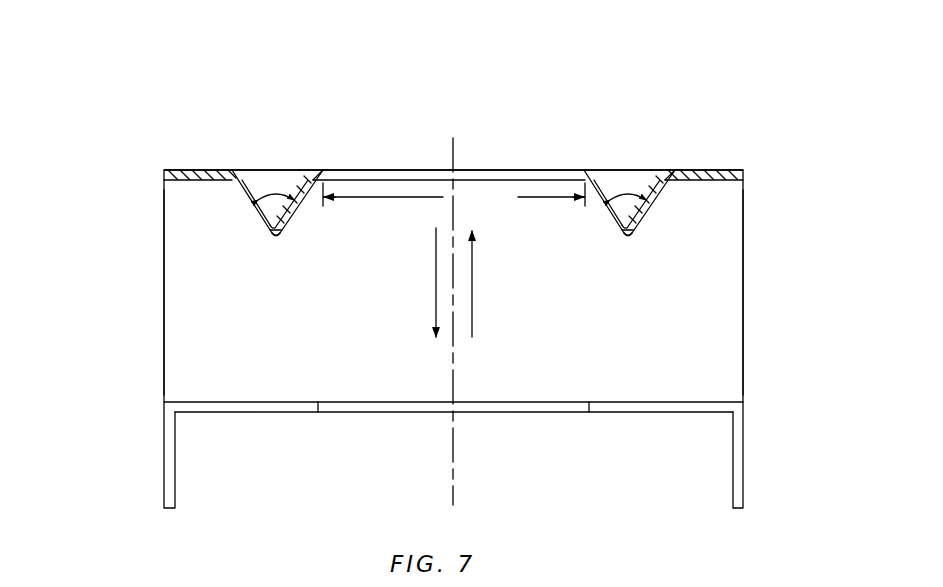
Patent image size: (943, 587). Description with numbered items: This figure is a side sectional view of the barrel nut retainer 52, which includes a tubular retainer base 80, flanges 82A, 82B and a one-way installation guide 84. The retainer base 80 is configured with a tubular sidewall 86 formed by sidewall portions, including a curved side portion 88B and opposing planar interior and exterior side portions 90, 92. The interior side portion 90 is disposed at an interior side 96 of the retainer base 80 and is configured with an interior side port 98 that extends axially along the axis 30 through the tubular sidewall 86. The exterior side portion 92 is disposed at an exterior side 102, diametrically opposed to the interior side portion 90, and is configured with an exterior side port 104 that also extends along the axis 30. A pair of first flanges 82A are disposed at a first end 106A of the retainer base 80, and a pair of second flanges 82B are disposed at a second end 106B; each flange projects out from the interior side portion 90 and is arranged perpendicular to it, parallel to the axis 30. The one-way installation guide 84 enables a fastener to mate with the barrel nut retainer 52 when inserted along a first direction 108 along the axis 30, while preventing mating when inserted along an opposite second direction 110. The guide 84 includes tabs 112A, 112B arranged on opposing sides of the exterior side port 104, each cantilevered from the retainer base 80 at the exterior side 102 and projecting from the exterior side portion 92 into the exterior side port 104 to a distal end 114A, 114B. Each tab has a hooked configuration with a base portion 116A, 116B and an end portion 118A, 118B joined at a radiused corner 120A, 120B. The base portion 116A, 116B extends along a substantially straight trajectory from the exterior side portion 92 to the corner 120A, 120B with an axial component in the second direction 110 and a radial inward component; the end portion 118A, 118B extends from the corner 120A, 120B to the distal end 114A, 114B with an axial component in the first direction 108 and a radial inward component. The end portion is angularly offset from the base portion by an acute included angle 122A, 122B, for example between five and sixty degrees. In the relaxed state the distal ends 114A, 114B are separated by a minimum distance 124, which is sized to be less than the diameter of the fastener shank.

The barrel nut retainer 52 is at (806, 76).
The axis 30 is at (453, 497).
The retainer base 80 is at (715, 129).
The tubular sidewall 86 is at (725, 166).
The first flanges 82A is at (164, 463).
The second flanges 82B is at (743, 460).
The one-way installation guide 84 is at (333, 153).
The curved side portion 88B is at (164, 297).
The interior side portion 90 is at (210, 413).
The exterior side portion 92 is at (182, 170).
The interior side 96 is at (275, 423).
The interior side port 98 is at (375, 413).
The exterior side 102 is at (257, 165).
The exterior side port 104 is at (527, 174).
The first end 106A is at (153, 238).
The second end 106B is at (752, 252).
The first direction 108 is at (472, 322).
The second direction 110 is at (436, 302).
The tab 112A is at (268, 243).
The tab 112B is at (639, 243).
The distal end 114A is at (321, 170).
The distal end 114B is at (585, 170).
The base portion 116A is at (248, 198).
The base portion 116B is at (660, 203).
The end portion 118A is at (290, 215).
The end portion 118B is at (615, 215).
The corner 120A is at (276, 237).
The corner 120B is at (628, 237).
The included angle 122A is at (273, 192).
The included angle 122B is at (630, 192).
The distance 124 is at (454, 196).